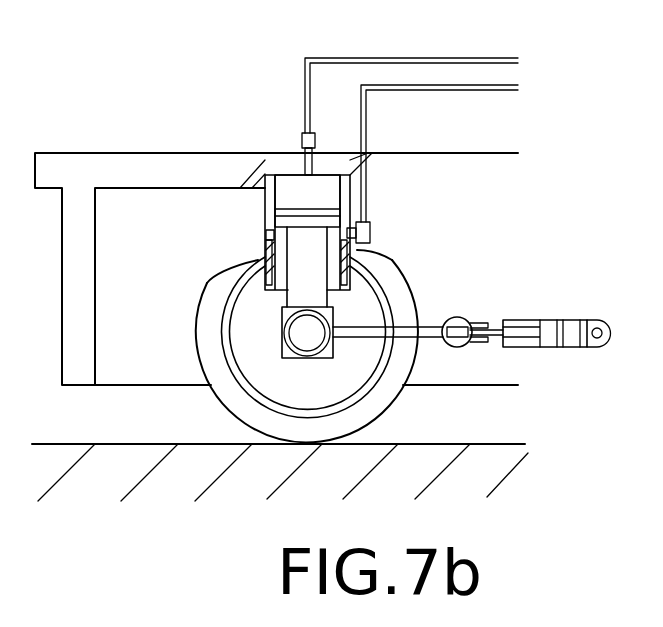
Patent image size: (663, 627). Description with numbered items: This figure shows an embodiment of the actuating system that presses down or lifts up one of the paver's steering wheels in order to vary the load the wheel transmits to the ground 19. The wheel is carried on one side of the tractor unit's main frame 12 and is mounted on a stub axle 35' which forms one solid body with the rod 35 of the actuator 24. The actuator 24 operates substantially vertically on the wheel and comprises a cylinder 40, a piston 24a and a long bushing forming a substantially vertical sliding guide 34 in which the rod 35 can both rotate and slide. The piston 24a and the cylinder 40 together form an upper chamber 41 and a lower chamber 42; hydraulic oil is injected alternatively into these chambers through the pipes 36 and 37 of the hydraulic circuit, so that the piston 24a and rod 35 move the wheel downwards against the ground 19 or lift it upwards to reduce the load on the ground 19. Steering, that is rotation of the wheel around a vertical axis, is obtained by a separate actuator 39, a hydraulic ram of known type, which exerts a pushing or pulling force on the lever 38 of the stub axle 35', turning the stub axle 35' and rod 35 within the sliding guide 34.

The main frame 12 is at (78, 170).
The ground 19 is at (483, 472).
The actuator 24 is at (362, 256).
The piston 24a is at (263, 223).
The sliding guide 34 is at (266, 263).
The rod 35 is at (253, 330).
The stub axle 35' is at (303, 354).
The pipe 36 is at (361, 57).
The pipe 37 is at (483, 84).
The lever 38 is at (412, 336).
The actuator 39 is at (590, 317).
The cylinder 40 is at (262, 270).
The upper chamber 41 is at (298, 183).
The lower chamber 42 is at (262, 232).